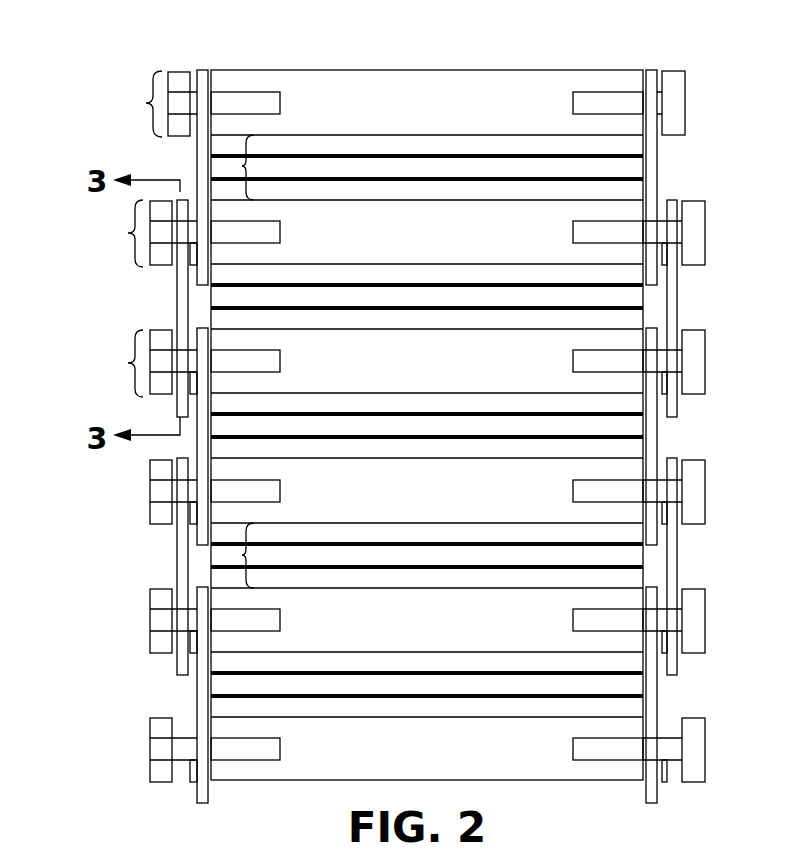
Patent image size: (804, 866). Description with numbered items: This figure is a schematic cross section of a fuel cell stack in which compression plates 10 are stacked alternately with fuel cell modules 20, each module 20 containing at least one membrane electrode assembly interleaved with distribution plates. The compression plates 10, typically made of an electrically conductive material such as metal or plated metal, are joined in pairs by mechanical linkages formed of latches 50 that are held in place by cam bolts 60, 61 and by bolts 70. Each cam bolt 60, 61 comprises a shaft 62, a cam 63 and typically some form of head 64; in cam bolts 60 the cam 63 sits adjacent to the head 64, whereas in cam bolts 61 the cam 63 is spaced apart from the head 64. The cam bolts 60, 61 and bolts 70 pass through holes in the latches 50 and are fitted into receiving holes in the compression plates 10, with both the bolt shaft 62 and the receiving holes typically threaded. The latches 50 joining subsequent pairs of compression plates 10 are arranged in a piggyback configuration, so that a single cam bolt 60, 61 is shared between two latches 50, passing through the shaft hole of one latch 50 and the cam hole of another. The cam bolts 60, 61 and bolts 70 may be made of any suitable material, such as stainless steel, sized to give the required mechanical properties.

The compression plate 10 is at (375, 87).
The fuel cell module 20 is at (243, 166).
The latch 50 is at (200, 69).
The cam bolt 60 is at (114, 363).
The cam bolt 61 is at (114, 233).
The shaft 62 is at (242, 98).
The cam 63 is at (190, 520).
The head 64 is at (177, 72).
The bolt 70 is at (133, 104).